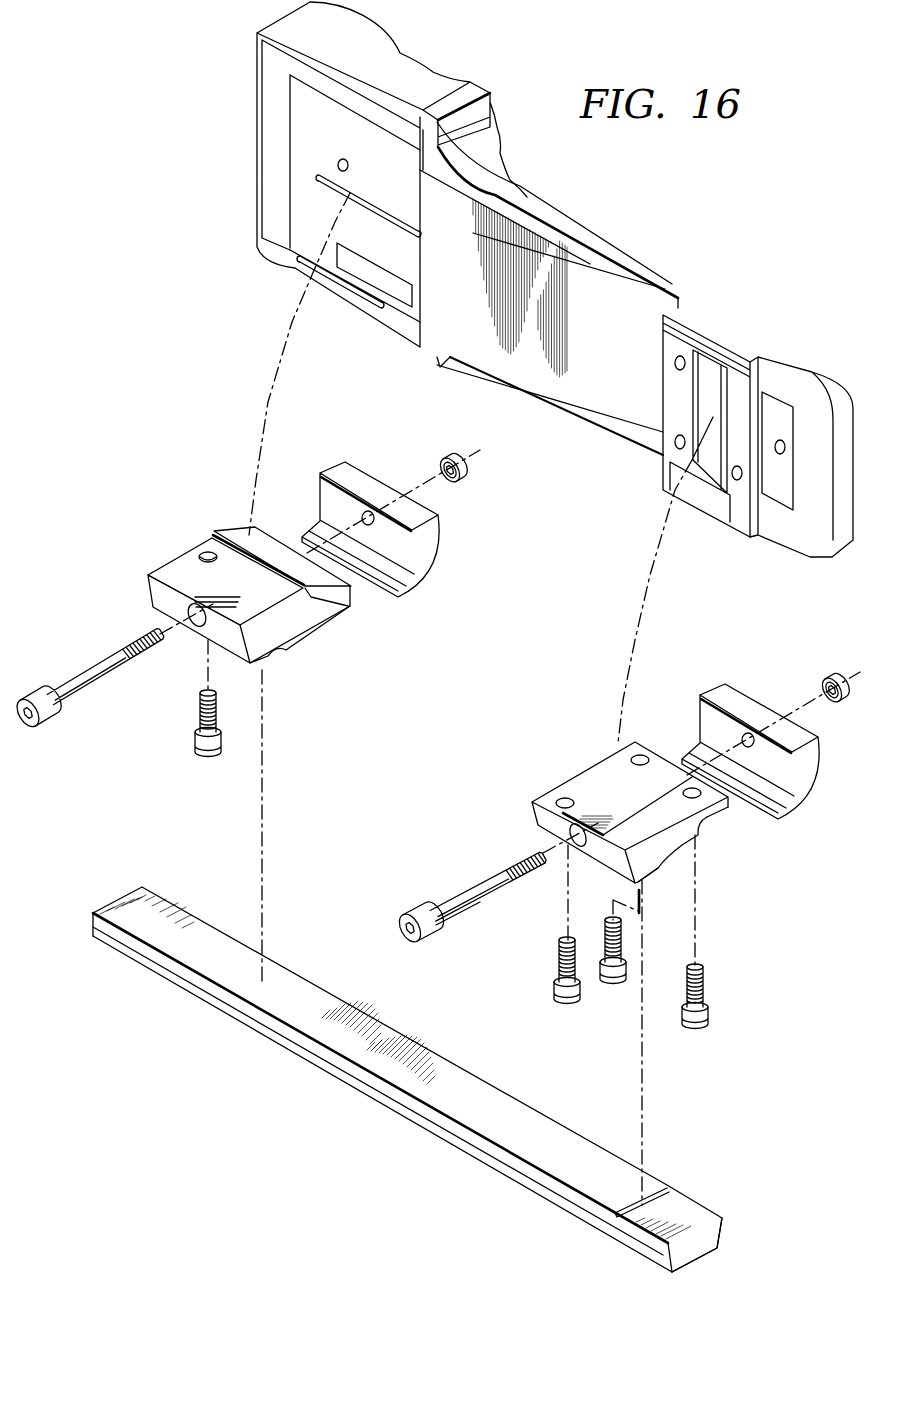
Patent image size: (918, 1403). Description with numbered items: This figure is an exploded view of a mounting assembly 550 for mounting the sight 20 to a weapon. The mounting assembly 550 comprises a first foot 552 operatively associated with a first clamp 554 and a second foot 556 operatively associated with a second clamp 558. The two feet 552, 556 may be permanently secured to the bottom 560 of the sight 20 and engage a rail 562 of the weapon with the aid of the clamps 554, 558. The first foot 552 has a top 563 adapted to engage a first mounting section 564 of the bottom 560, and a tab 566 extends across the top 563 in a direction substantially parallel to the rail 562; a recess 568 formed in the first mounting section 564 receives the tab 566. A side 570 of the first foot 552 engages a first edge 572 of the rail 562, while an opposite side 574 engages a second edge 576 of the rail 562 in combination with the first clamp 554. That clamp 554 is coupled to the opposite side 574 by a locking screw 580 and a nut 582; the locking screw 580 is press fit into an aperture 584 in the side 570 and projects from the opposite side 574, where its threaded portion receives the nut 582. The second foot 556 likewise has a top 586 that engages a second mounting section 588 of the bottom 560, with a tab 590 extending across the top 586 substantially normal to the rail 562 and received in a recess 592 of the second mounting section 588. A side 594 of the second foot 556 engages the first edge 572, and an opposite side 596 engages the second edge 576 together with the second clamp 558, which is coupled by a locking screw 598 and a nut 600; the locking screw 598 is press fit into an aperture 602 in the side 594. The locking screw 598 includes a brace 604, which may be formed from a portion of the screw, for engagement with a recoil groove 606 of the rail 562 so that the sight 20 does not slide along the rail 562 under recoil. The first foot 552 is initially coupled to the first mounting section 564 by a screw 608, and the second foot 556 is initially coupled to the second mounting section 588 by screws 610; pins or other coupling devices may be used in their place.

The sight 20 is at (400, 65).
The mounting assembly 550 is at (158, 308).
The first foot 552 is at (167, 572).
The first clamp 554 is at (427, 543).
The second foot 556 is at (703, 828).
The second clamp 558 is at (807, 780).
The bottom of the sight 560 is at (606, 382).
The rail 562 is at (697, 1243).
The top of the first foot 563 is at (262, 598).
The first mounting section 564 is at (306, 208).
The tab 566 is at (220, 537).
The recess 568 is at (322, 173).
The side of the first foot 570 is at (267, 657).
The first edge of the rail 572 is at (667, 1252).
The opposite side of the first foot 574 is at (338, 610).
The second edge of the rail 576 is at (712, 1230).
The locking screw 580 is at (78, 674).
The nut 582 is at (445, 457).
The aperture 584 is at (187, 610).
The top of the second foot 586 is at (670, 855).
The second mounting section 588 is at (752, 412).
The tab 590 is at (603, 802).
The recess 592 is at (712, 392).
The side of the second foot 594 is at (650, 876).
The opposite side of the second foot 596 is at (722, 822).
The locking screw 598 is at (453, 893).
The nut 600 is at (828, 678).
The aperture 602 is at (558, 828).
The brace 604 is at (447, 932).
The recoil groove 606 is at (622, 1212).
The screw 608 is at (197, 743).
The screws 610 is at (700, 1025).